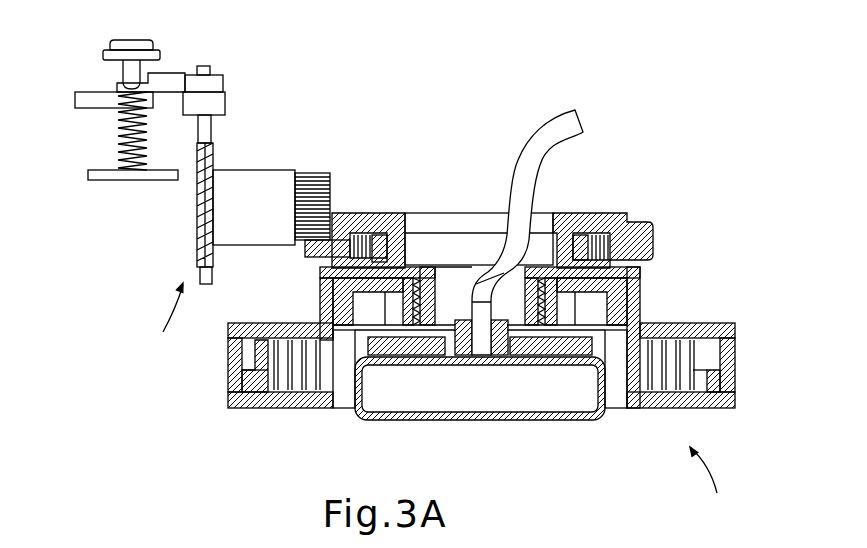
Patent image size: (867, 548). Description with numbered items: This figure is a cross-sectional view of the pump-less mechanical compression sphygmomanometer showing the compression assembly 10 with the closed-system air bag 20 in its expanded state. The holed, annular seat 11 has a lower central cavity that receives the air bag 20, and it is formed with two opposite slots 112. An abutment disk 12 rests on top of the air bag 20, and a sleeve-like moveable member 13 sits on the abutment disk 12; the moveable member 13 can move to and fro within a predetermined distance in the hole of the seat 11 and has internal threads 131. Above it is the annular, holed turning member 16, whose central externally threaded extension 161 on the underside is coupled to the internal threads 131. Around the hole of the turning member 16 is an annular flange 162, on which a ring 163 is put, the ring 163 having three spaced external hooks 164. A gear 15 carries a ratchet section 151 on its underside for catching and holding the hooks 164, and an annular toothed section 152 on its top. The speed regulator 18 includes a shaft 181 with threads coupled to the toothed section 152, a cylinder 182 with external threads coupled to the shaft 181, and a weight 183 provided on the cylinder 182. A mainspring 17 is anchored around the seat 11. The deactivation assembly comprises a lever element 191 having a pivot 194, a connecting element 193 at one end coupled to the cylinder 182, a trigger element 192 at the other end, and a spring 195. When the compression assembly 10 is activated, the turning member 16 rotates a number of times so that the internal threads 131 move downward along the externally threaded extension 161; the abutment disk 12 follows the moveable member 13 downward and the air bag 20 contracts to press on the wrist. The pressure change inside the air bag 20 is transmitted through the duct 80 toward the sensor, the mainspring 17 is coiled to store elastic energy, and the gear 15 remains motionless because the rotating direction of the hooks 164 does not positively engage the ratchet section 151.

The compression assembly 10 is at (674, 422).
The annular seat 11 is at (228, 373).
The slots 112 is at (350, 400).
The abutment disk 12 is at (580, 342).
The moveable member 13 is at (322, 297).
The internal threads 131 is at (408, 338).
The gear 15 is at (363, 213).
The ratchet section 151 is at (318, 250).
The toothed section 152 is at (638, 220).
The turning member 16 is at (279, 322).
The externally threaded extension 161 is at (435, 293).
The annular flange 162 is at (405, 250).
The ring 163 is at (376, 234).
The hooks 164 is at (604, 249).
The mainspring 17 is at (230, 356).
The speed regulator 18 is at (169, 320).
The shaft 181 is at (244, 181).
The cylinder 182 is at (197, 217).
The weight 183 is at (222, 100).
The lever element 191 is at (158, 83).
The trigger element 192 is at (132, 43).
The connecting element 193 is at (218, 78).
The pivot 194 is at (90, 97).
The spring 195 is at (120, 138).
The air bag 20 is at (567, 424).
The duct 80 is at (562, 128).